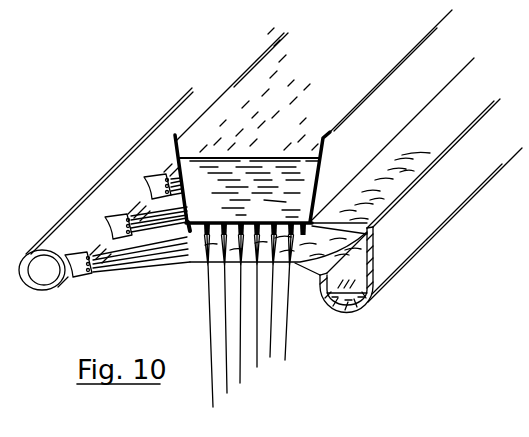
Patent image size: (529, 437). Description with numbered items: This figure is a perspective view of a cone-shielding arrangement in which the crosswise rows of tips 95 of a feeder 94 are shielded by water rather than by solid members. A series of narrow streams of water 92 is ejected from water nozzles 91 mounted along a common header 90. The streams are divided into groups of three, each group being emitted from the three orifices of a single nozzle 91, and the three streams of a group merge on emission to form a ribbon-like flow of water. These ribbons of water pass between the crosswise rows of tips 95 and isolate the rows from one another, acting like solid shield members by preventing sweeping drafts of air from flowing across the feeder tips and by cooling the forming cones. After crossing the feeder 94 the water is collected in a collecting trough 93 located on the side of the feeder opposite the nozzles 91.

The common header 90 is at (28, 290).
The water nozzle 91 is at (77, 284).
The narrow streams of water 92 is at (127, 265).
The collecting trough 93 is at (343, 315).
The feeder 94 is at (230, 88).
The tips 95 is at (200, 226).